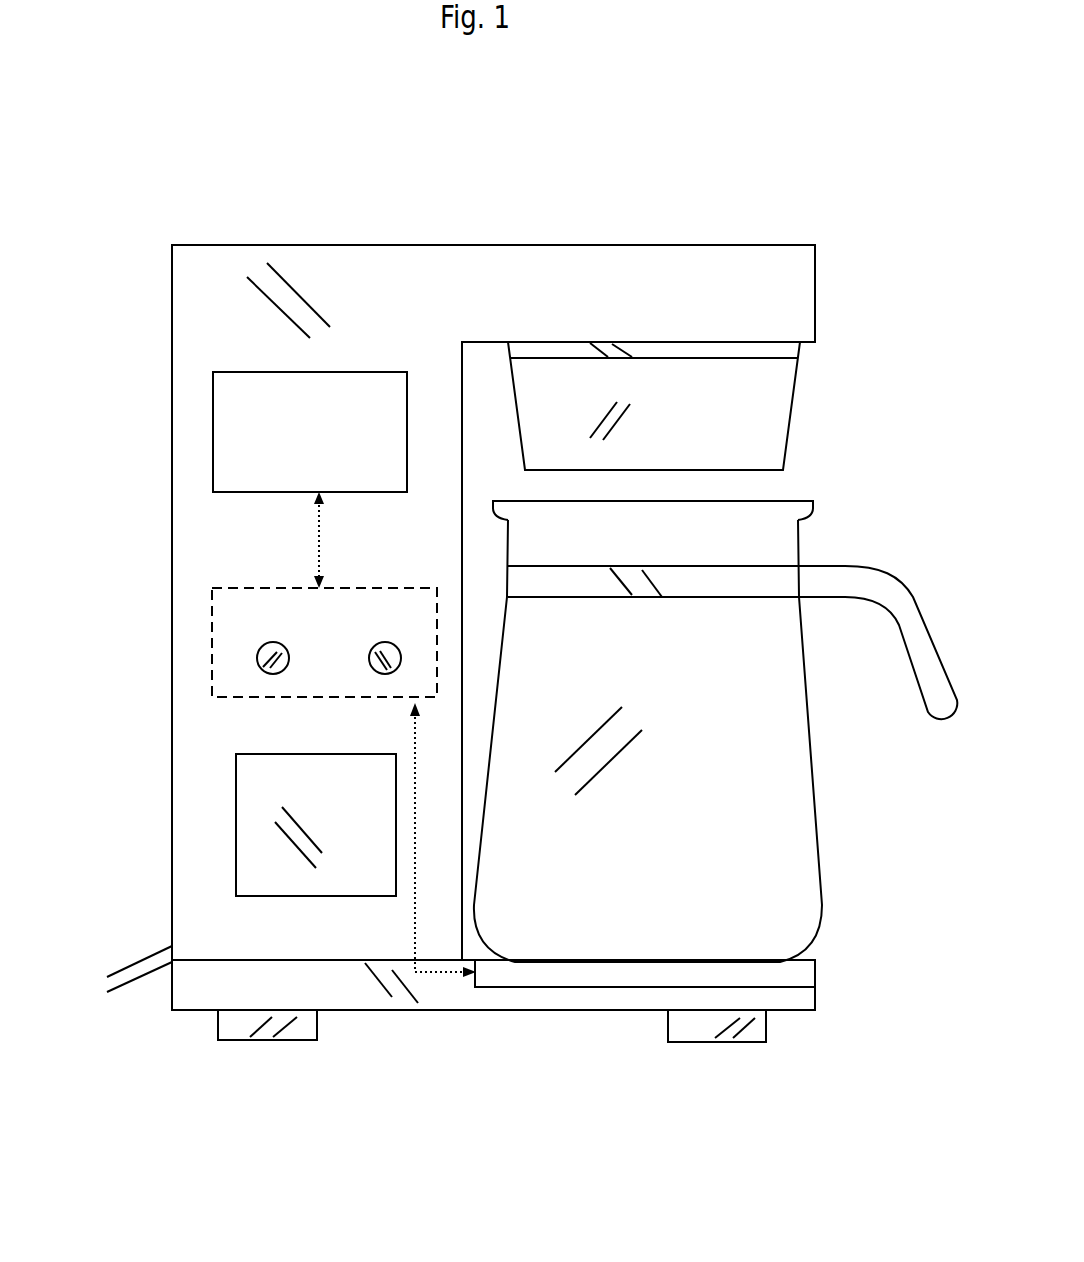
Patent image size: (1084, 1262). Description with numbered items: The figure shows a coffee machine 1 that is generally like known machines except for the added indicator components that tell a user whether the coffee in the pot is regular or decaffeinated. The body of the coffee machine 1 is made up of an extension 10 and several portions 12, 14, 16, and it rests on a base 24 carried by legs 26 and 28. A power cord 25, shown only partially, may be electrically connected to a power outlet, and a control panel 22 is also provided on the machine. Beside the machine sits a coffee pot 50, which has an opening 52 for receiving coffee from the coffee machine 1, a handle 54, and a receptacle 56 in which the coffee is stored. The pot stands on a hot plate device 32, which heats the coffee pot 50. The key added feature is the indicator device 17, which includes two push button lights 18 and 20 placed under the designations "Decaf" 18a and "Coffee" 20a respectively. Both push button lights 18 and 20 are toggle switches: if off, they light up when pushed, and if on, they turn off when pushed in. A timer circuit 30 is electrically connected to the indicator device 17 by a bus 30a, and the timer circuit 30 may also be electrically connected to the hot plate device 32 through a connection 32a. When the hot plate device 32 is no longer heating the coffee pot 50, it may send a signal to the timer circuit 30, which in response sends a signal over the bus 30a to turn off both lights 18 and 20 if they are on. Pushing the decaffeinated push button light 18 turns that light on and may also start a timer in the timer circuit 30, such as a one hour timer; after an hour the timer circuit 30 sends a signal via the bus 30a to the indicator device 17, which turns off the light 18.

The coffee machine 1 is at (493, 199).
The extension 10 is at (493, 583).
The portion 12 is at (698, 406).
The portion 14 is at (720, 330).
The portion 16 is at (203, 300).
The indicator device 17 is at (324, 615).
The push button light 18 is at (187, 649).
The designation "Decaf" 18a is at (238, 587).
The push button light 20 is at (327, 687).
The designation "Coffee" 20a is at (390, 575).
The control panel 22 is at (252, 825).
The base 24 is at (457, 1005).
The power cord 25 is at (119, 918).
The leg 26 is at (255, 1070).
The leg 28 is at (717, 1059).
The timer circuit 30 is at (257, 432).
The bus 30a is at (289, 540).
The hot plate device 32 is at (645, 1023).
The signal connection to warming plate 32a is at (403, 840).
The coffee pot 50 is at (695, 736).
The opening 52 is at (699, 491).
The handle 54 is at (732, 637).
The receptacle 56 is at (718, 764).